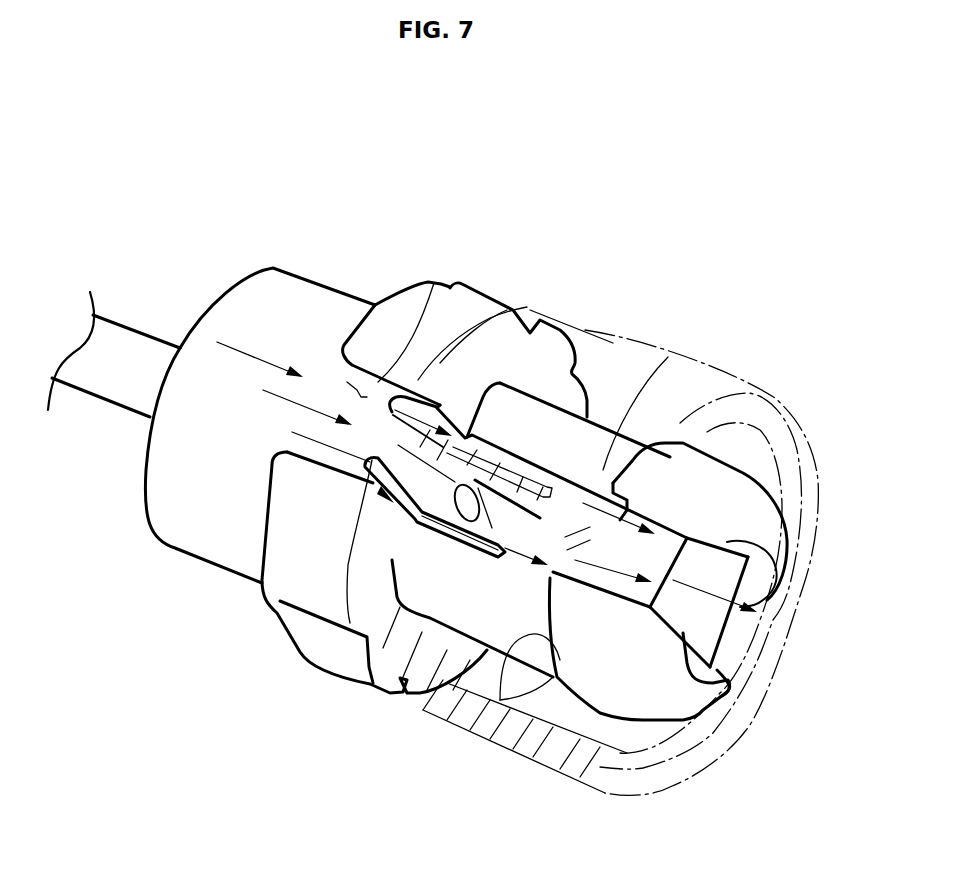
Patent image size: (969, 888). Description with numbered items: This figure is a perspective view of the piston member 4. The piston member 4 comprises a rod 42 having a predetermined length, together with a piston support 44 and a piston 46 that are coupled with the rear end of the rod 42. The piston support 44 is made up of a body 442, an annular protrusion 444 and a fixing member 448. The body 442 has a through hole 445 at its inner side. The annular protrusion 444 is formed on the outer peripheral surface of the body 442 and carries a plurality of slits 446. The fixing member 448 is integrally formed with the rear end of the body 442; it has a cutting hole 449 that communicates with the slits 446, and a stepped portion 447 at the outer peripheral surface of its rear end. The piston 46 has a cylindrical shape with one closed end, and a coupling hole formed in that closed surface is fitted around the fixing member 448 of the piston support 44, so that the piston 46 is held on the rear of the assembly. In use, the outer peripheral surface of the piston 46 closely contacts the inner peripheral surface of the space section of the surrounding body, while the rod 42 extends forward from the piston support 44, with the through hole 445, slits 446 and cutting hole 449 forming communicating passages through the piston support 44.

The piston member 4 is at (666, 226).
The rod 42 is at (127, 337).
The piston support 44 is at (318, 272).
The piston 46 is at (637, 340).
The body 442 is at (260, 283).
The annular protrusion 444 is at (408, 284).
The through hole 445 is at (470, 534).
The slits 446 is at (445, 290).
The stepped portion 447 is at (547, 633).
The fixing member 448 is at (586, 683).
The cutting hole 449 is at (578, 540).